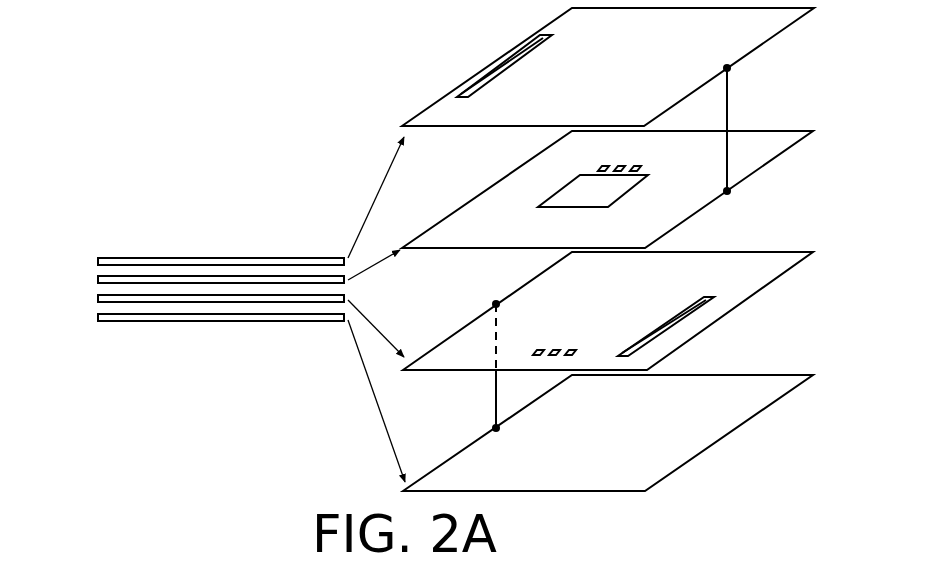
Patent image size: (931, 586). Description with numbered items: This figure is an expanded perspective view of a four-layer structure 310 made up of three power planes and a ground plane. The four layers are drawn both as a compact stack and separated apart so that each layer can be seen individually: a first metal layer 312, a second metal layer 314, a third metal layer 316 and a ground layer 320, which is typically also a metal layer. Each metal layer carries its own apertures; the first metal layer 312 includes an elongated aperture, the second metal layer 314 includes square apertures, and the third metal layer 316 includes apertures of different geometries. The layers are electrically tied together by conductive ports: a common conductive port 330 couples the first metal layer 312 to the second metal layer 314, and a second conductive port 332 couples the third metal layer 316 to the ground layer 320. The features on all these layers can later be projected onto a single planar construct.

The four-layer structure 310 is at (187, 256).
The first metal layer 312 is at (814, 8).
The second metal layer 314 is at (813, 131).
The third metal layer 316 is at (813, 252).
The ground layer 320 is at (813, 375).
The common conductive port 330 is at (728, 126).
The second conductive port 332 is at (496, 383).